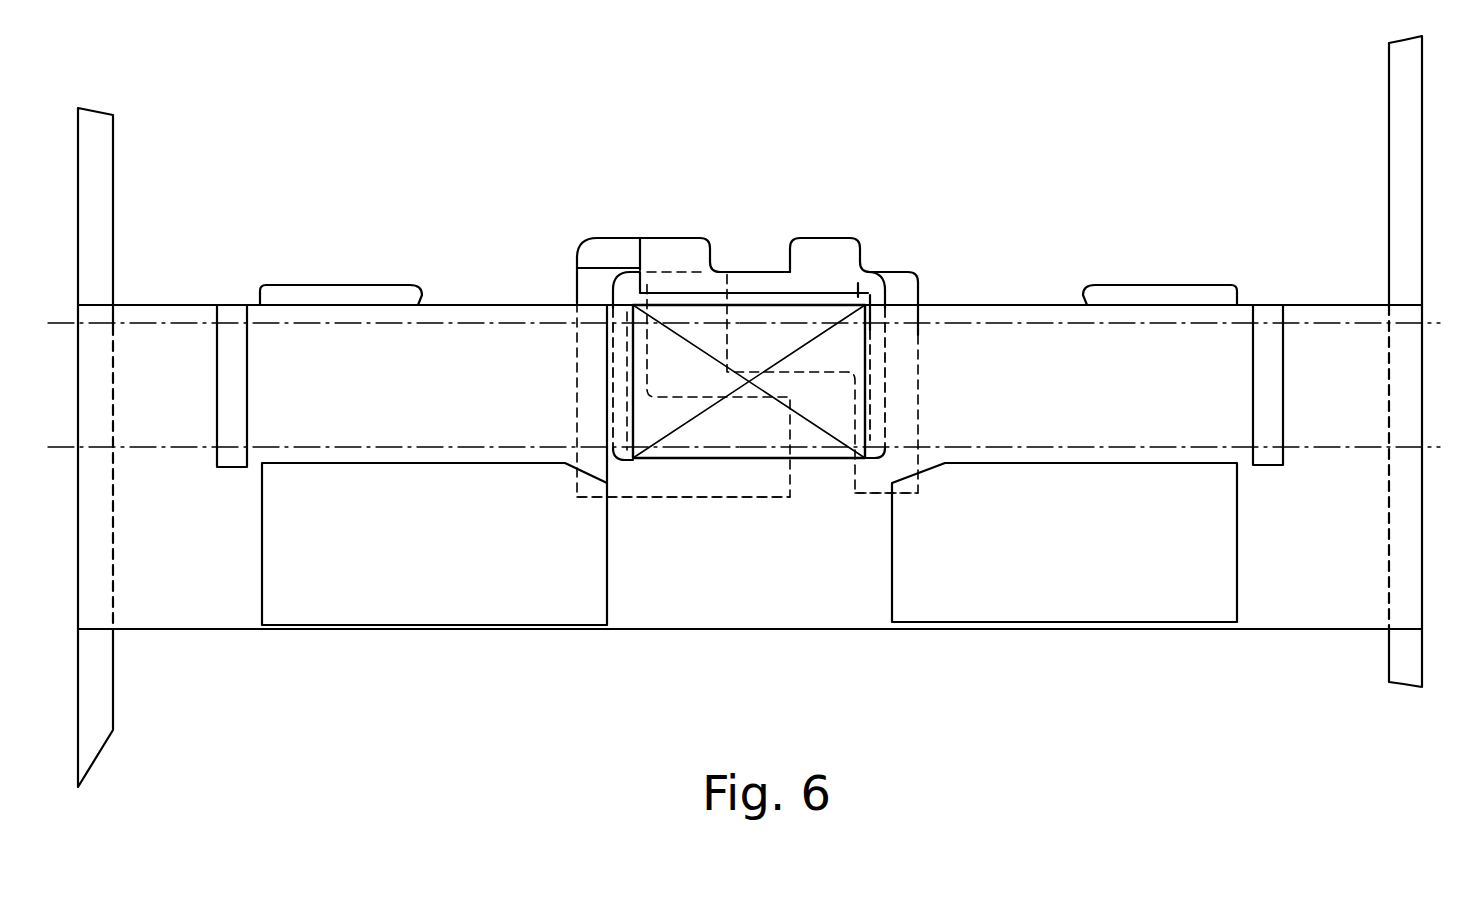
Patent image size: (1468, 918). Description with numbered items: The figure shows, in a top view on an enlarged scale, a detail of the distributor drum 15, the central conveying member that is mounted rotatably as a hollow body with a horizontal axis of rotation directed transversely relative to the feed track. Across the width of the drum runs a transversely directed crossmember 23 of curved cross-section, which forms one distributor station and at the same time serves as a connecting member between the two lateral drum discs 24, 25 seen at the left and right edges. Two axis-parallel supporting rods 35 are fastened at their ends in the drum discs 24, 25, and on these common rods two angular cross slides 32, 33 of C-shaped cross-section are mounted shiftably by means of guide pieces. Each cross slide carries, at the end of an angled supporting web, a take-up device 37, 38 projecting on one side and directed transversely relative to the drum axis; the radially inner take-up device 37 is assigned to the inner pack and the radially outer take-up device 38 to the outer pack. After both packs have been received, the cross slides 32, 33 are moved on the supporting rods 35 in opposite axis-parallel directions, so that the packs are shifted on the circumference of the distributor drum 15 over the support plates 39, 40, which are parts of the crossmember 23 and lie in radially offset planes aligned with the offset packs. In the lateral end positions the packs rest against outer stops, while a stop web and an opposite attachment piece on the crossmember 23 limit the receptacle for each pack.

The distributor drum 15 is at (958, 213).
The crossmember 23 is at (505, 250).
The drum disc 24 is at (93, 207).
The drum disc 25 is at (1399, 197).
The cross slide 32 is at (664, 205).
The cross slide 33 is at (867, 195).
The supporting rod 35 is at (1035, 325).
The take-up device 37 is at (583, 290).
The take-up device 38 is at (878, 345).
The support plate 39 is at (1168, 365).
The support plate 40 is at (337, 370).